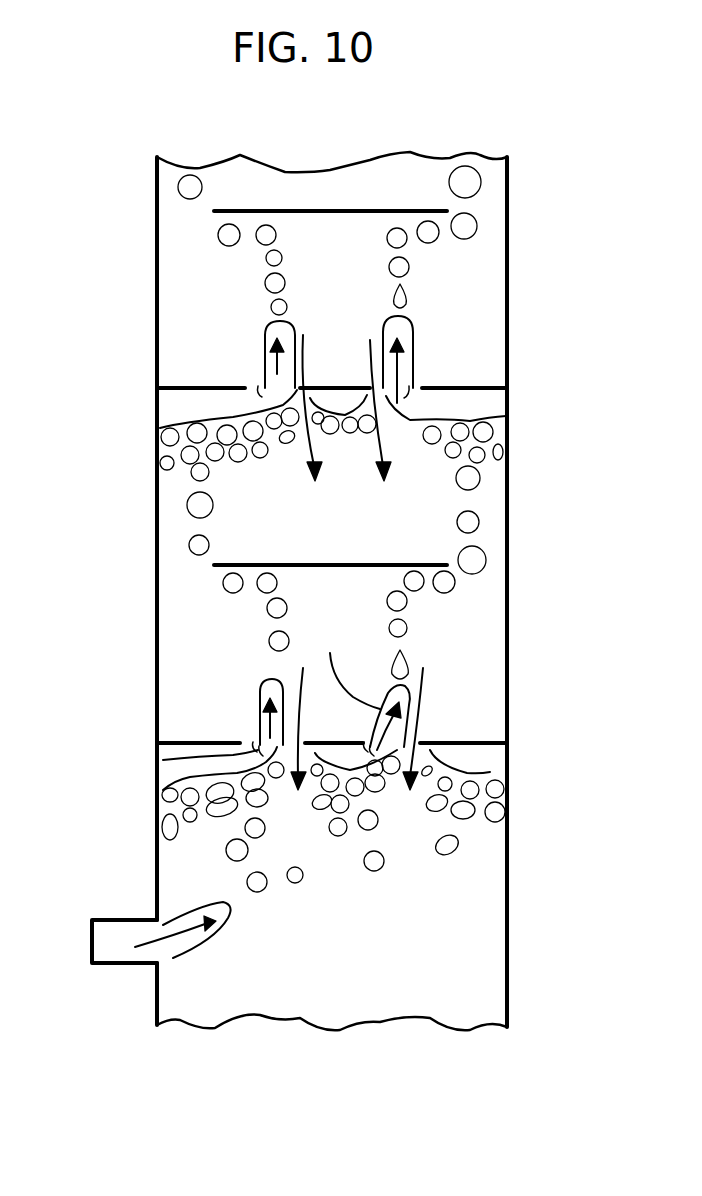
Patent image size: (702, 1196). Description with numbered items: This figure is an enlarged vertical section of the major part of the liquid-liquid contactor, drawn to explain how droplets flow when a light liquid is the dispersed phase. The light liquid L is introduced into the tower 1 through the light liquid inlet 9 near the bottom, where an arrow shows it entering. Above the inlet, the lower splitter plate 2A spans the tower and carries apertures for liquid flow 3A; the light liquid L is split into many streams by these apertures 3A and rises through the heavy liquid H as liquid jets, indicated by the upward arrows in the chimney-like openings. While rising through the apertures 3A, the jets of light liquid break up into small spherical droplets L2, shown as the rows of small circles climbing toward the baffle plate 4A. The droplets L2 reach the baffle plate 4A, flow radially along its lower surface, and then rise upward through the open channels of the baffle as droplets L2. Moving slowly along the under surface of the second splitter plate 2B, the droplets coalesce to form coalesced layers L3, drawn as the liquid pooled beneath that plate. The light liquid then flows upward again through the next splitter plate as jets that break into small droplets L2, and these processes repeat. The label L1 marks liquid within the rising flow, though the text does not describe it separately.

The tower 1 is at (155, 263).
The lower splitter plate 2A is at (205, 743).
The second splitter plate 2B is at (192, 388).
The apertures for liquid flow 3A is at (195, 757).
The baffle plate 4A is at (302, 562).
The light liquid inlet 9 is at (115, 920).
The heavy liquid H is at (478, 675).
The light liquid L is at (480, 758).
The liquid entrained in chimney L1 is at (345, 666).
The small spherical droplets L2 is at (408, 296).
The coalesced layers L3 is at (185, 408).